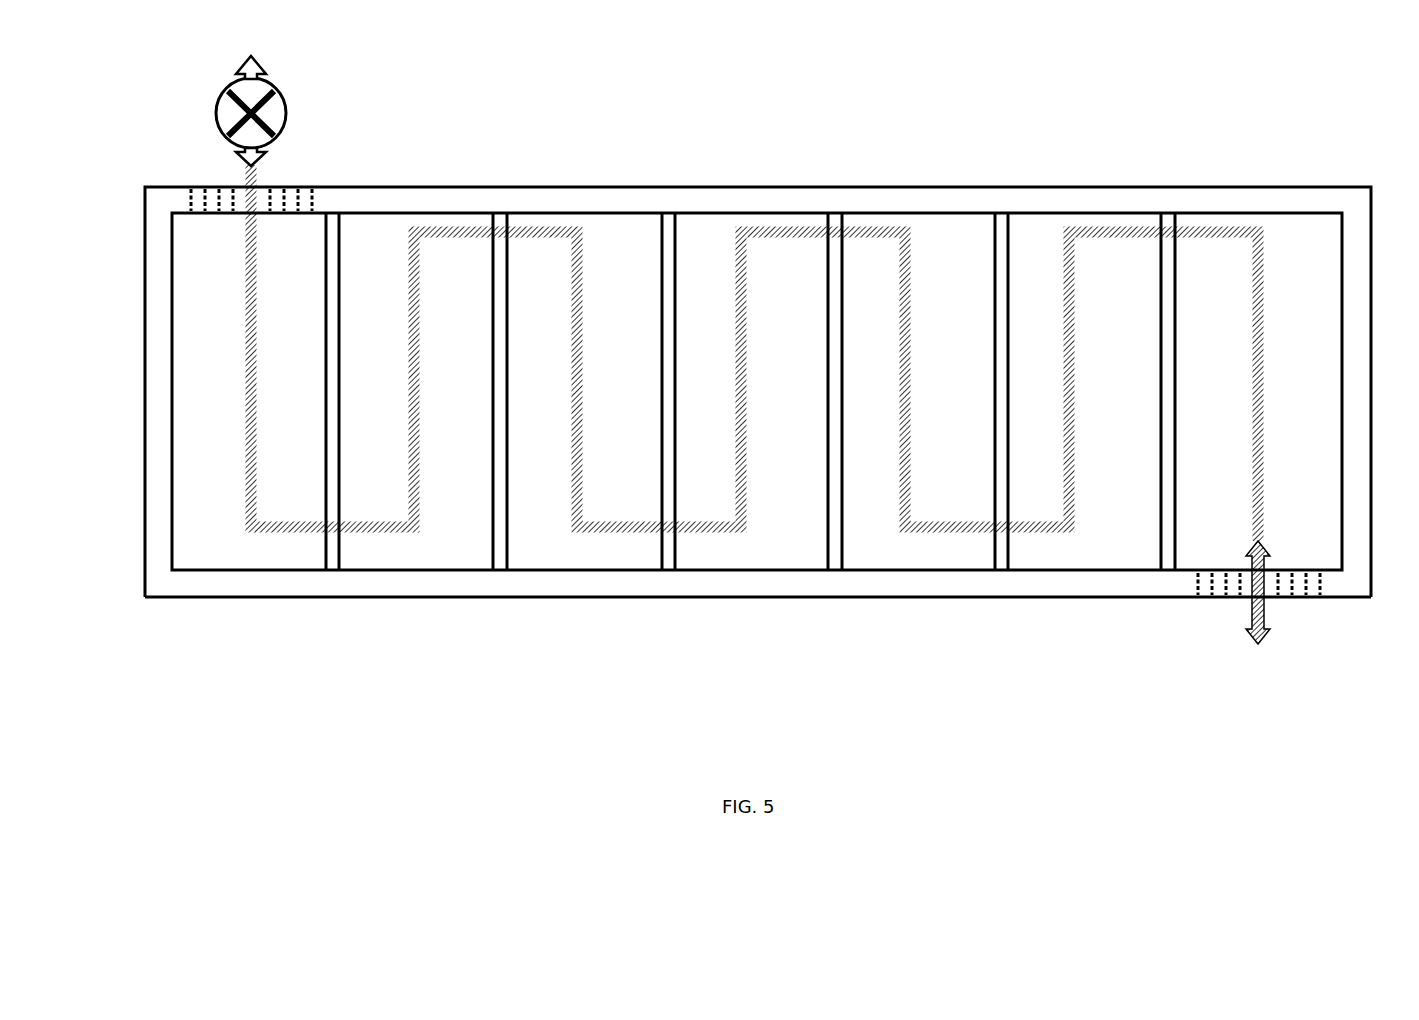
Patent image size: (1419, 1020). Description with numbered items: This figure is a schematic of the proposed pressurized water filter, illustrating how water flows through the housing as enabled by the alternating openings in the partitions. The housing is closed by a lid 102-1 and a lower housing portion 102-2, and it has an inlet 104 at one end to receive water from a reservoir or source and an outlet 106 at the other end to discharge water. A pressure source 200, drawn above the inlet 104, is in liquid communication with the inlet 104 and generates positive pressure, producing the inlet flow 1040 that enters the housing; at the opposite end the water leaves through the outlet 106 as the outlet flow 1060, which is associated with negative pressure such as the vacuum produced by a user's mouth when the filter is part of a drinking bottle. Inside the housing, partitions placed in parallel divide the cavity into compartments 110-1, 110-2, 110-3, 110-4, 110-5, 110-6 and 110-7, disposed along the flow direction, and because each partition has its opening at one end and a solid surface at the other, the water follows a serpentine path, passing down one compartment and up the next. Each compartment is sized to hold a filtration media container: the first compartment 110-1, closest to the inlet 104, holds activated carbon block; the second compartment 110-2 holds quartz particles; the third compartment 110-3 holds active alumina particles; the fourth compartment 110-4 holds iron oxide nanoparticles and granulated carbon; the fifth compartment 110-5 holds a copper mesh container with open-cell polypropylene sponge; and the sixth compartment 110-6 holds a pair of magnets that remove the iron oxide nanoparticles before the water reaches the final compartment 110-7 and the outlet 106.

The lid 102-1 is at (772, 176).
The second housing portion 102-2 is at (963, 594).
The inlet 104 is at (192, 184).
The outlet 106 is at (1183, 598).
The pressure source 200 is at (255, 98).
The inlet flow under positive pressure 1040 is at (262, 185).
The outlet flow under negative pressure 1060 is at (1270, 588).
The first compartment 110-1 is at (272, 566).
The second compartment 110-2 is at (442, 566).
The third compartment 110-3 is at (595, 568).
The fourth compartment 110-4 is at (773, 568).
The fifth compartment 110-5 is at (895, 220).
The sixth compartment 110-6 is at (1075, 222).
The seventh compartment 110-7 is at (1257, 222).